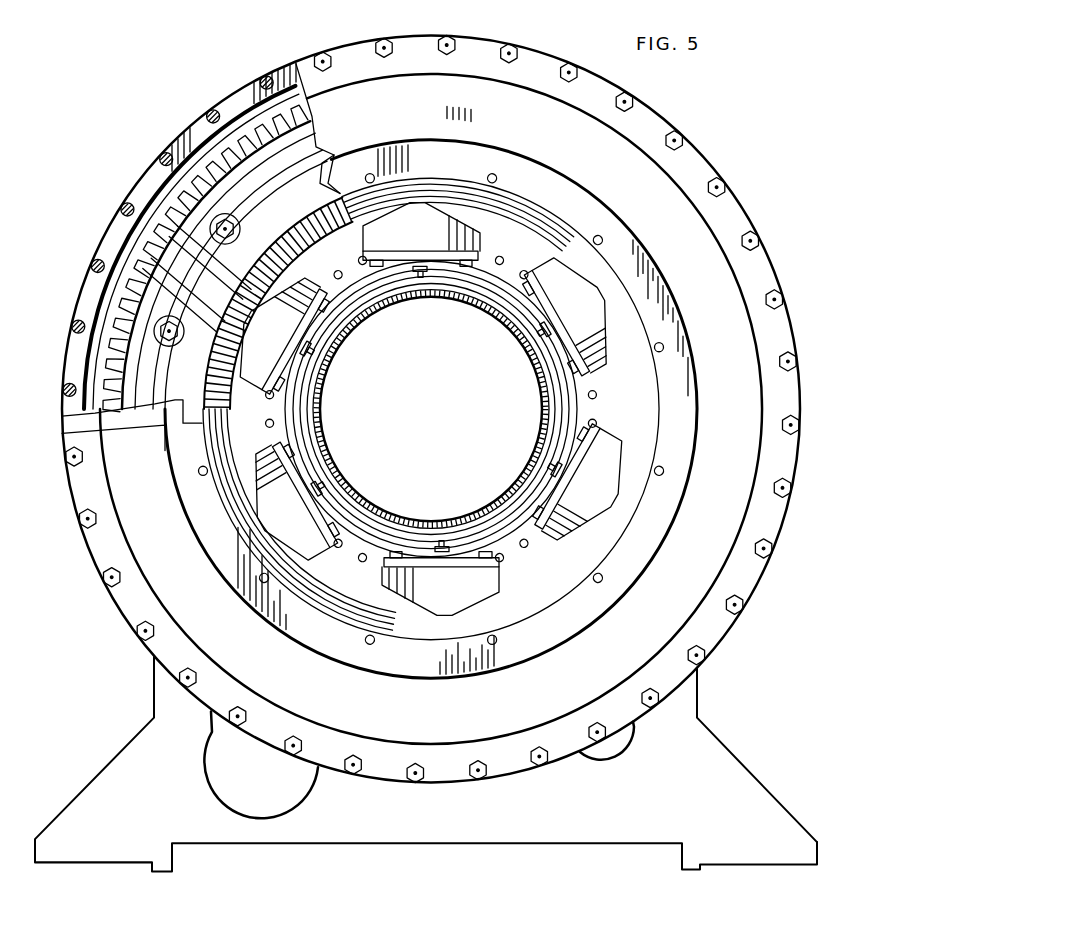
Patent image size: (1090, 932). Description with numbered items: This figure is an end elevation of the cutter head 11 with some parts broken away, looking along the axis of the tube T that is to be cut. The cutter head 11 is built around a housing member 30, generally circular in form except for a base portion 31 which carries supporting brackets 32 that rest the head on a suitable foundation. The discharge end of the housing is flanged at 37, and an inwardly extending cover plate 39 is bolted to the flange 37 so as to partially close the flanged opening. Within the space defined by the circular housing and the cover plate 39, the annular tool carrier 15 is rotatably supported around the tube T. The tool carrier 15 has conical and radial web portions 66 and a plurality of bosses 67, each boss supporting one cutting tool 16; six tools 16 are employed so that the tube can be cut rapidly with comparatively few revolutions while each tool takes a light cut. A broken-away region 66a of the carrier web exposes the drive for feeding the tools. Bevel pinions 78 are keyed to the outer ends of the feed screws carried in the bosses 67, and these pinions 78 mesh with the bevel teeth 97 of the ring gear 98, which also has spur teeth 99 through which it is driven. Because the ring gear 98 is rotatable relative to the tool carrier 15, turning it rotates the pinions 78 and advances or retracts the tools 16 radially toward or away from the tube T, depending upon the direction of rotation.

The cutter head 11 is at (696, 131).
The tool carrier 15 is at (483, 233).
The cutting tool 16 is at (425, 272).
The housing member 30 is at (233, 112).
The base portion 31 is at (673, 734).
The supporting brackets 32 is at (754, 787).
The flange 37 is at (150, 188).
The cover plate 39 is at (700, 173).
The conical and radial web portions 66 is at (648, 423).
The notch 66a is at (318, 184).
The bosses 67 is at (218, 276).
The bevel pinions 78 is at (150, 258).
The bevel teeth 97 is at (122, 318).
The ring gear 98 is at (107, 366).
The spur teeth 99 is at (122, 297).
The tube T is at (541, 446).